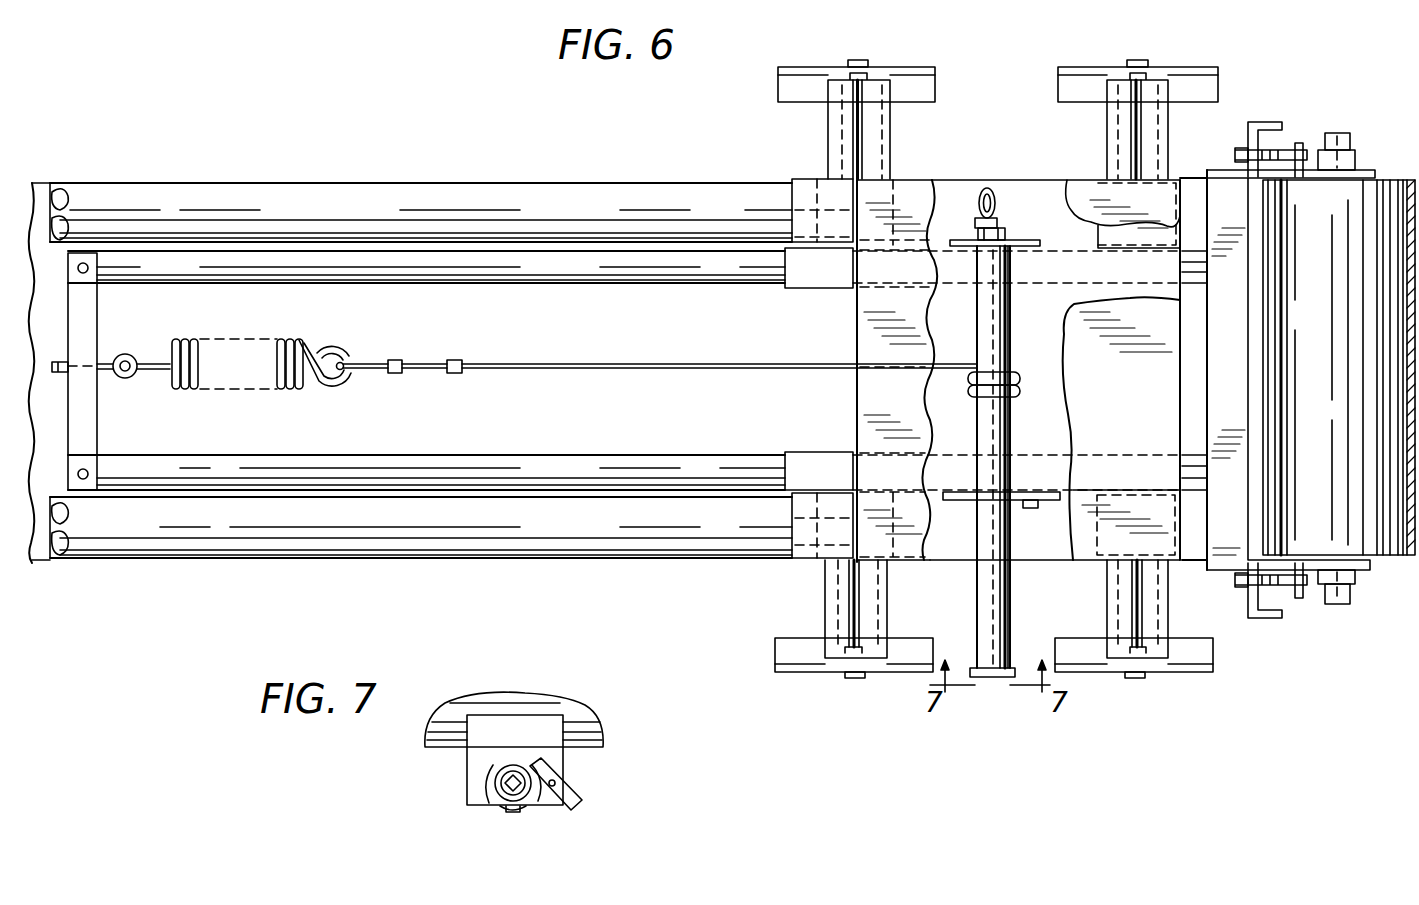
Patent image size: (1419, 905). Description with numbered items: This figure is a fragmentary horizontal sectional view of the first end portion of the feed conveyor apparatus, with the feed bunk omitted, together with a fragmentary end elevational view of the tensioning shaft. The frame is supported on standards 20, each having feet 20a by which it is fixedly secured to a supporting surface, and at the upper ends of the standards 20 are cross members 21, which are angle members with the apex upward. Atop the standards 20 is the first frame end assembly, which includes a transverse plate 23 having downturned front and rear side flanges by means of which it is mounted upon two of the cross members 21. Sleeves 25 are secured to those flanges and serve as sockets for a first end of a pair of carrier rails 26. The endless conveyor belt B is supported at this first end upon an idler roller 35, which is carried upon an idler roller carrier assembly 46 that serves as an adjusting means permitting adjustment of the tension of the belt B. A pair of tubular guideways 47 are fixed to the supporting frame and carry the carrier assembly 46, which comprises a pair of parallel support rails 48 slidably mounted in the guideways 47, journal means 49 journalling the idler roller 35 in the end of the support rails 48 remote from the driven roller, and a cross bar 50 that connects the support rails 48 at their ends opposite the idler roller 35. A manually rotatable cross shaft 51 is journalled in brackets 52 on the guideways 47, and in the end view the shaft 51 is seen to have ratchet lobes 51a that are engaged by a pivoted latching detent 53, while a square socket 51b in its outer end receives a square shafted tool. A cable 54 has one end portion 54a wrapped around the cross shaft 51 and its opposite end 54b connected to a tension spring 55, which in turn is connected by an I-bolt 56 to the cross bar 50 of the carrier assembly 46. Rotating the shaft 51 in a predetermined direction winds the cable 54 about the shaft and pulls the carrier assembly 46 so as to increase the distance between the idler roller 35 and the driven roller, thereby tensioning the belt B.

In FIG. 6, the standards 20 is at (992, 367).
In FIG. 6, the feet 20a is at (938, 86).
In FIG. 6, the cross members 21 is at (826, 604).
In FIG. 6, the transverse plate 23 is at (912, 180).
In FIG. 6, the sleeves 25 is at (812, 179).
In FIG. 6, the carrier rails 26 is at (458, 118).
In FIG. 6, the idler roller 35 is at (1366, 548).
In FIG. 6, the idler roller carrier assembly 46 is at (560, 369).
In FIG. 6, the tubular guideways 47 is at (835, 289).
In FIG. 6, the support rails 48 is at (632, 286).
In FIG. 6, the journal means 49 is at (1313, 150).
In FIG. 6, the cross bar 50 is at (99, 320).
In FIG. 6, the manually rotatable cross shaft 51 is at (1010, 166).
In FIG. 7, the manually rotatable cross shaft 51 is at (486, 757).
In FIG. 7, the ratchet lobes 51a is at (522, 762).
In FIG. 7, the square socket 51b is at (505, 784).
In FIG. 6, the brackets 52 is at (998, 371).
In FIG. 7, the brackets 52 is at (502, 710).
In FIG. 6, the pivoted latching detent 53 is at (1038, 508).
In FIG. 7, the pivoted latching detent 53 is at (578, 793).
In FIG. 6, the cable 54 is at (702, 343).
In FIG. 6, the cable end portion 54a is at (1025, 370).
In FIG. 6, the cable opposite end 54b is at (371, 364).
In FIG. 6, the tension spring 55 is at (292, 338).
In FIG. 6, the I-bolt 56 is at (122, 380).
In FIG. 6, the endless conveyor belt B is at (1412, 180).